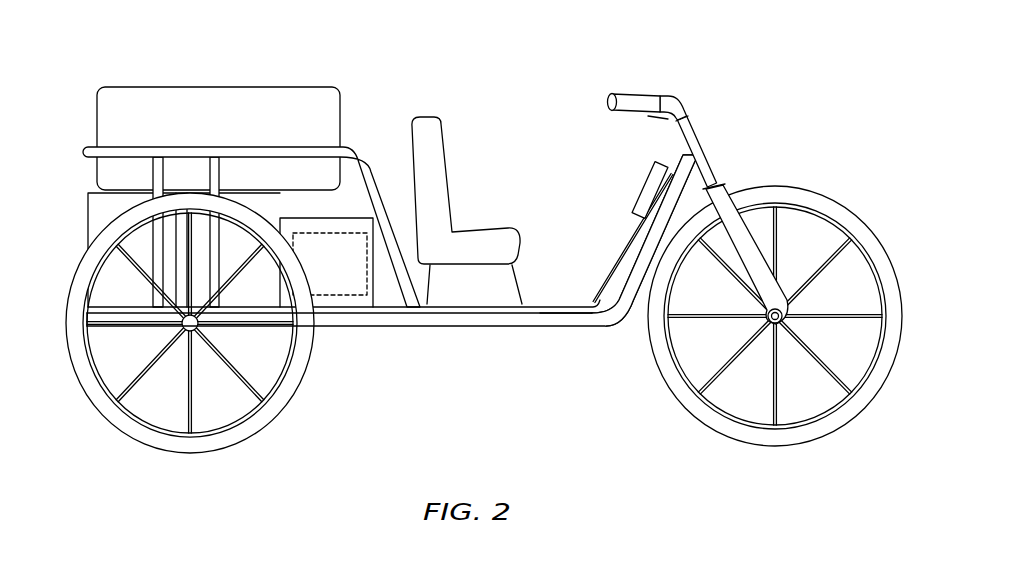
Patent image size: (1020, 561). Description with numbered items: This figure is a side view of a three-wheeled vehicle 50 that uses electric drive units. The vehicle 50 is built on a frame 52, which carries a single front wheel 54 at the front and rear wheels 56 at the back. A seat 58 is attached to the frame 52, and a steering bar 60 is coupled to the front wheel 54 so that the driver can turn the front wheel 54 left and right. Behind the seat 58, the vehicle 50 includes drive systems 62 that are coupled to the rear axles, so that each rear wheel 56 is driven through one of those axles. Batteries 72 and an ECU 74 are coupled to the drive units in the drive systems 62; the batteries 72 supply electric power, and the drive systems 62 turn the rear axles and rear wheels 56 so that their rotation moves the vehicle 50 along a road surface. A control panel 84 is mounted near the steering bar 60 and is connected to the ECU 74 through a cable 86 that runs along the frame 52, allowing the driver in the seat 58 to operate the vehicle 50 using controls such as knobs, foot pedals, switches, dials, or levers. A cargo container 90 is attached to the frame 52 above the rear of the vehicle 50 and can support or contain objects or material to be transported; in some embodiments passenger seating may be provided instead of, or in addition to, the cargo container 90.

The vehicle 50 is at (470, 232).
The frame 52 is at (483, 323).
The front wheel 54 is at (797, 192).
The rear wheel 56 is at (97, 253).
The seat 58 is at (431, 117).
The steering bar 60 is at (637, 98).
The drive systems 62 is at (98, 217).
The batteries 72 is at (342, 222).
The ECU 74 is at (315, 278).
The control panel 84 is at (648, 192).
The cable 86 is at (553, 308).
The cargo container 90 is at (183, 104).